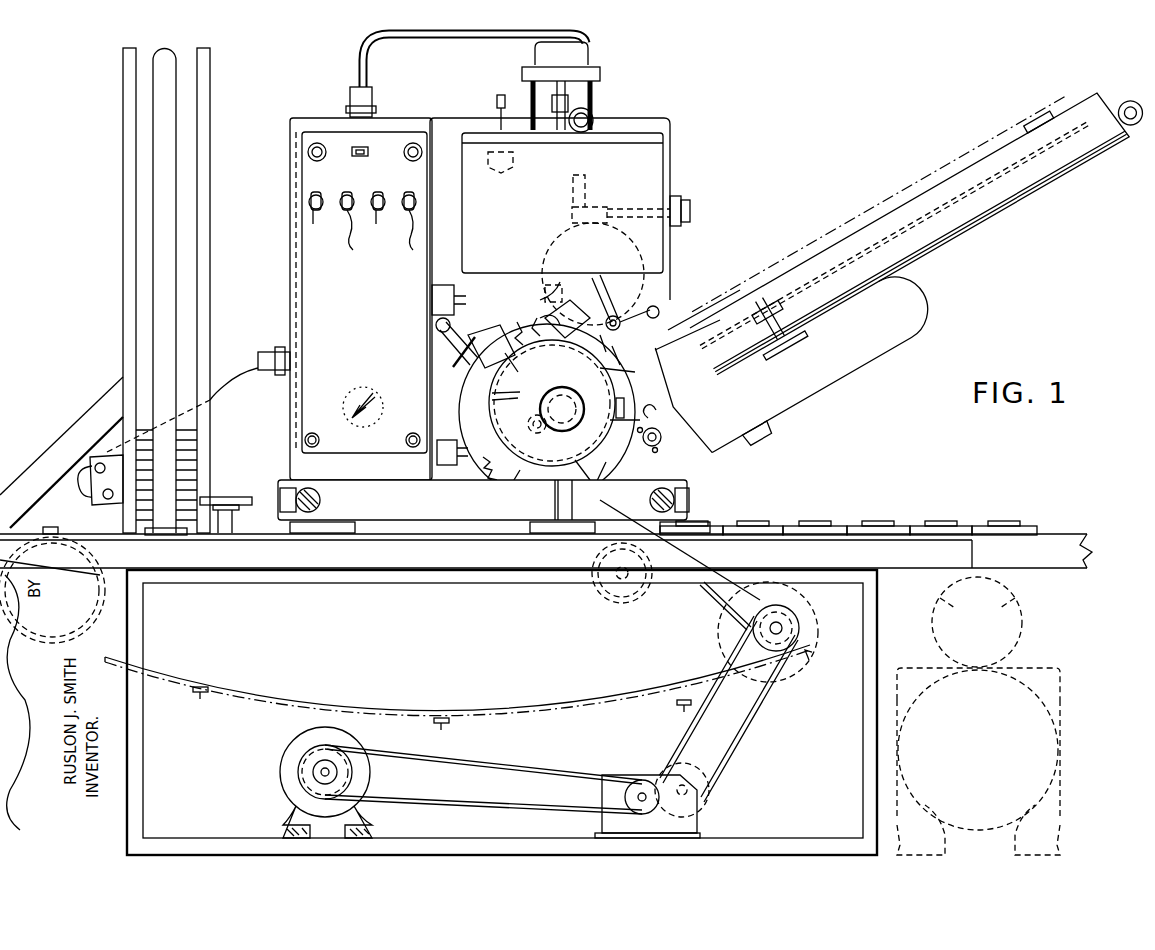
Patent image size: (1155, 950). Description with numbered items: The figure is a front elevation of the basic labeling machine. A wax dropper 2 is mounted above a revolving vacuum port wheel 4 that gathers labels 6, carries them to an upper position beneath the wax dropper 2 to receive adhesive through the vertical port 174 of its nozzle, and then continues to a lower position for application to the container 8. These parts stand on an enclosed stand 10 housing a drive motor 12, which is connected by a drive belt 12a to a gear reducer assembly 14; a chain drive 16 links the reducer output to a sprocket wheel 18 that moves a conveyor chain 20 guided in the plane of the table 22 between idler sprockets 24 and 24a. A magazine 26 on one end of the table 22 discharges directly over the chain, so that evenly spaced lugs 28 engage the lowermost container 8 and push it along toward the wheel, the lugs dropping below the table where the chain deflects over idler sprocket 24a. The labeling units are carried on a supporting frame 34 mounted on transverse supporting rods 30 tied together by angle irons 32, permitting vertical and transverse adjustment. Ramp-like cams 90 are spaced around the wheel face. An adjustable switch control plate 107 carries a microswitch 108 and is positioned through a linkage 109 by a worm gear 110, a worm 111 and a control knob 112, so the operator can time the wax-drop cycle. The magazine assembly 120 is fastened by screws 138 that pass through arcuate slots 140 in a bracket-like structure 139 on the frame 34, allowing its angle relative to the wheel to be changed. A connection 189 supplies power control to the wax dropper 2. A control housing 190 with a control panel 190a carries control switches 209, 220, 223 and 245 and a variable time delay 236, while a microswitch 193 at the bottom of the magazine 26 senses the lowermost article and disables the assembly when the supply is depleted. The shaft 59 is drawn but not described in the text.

The wax dropper 2 is at (622, 166).
The revolving vacuum port wheel 4 is at (552, 371).
The labels 6 is at (740, 520).
The container 8 is at (190, 490).
The enclosed stand 10 is at (863, 778).
The drive motor 12 is at (282, 765).
The drive belt 12a is at (562, 748).
The gear reducer assembly 14 is at (650, 780).
The chain drive 16 is at (738, 752).
The sprocket wheel 18 is at (812, 660).
The conveyor chain 20 is at (572, 700).
The table 22 is at (1088, 552).
The idler sprocket 24 is at (95, 575).
The idler sprocket 24a is at (632, 600).
The magazine 26 is at (183, 148).
The lugs 28 is at (52, 507).
The supporting rods 30 is at (298, 488).
The angle irons 32 is at (438, 508).
The supporting panel or frame 34 is at (667, 242).
The shaft 59 is at (540, 432).
The ramp-like cams 90 is at (605, 365).
The adjustable switch control plate 107 is at (525, 328).
The microswitch 108 is at (540, 298).
The linkage 109 is at (630, 302).
The worm gear 110 is at (562, 240).
The worm 111 is at (596, 195).
The control knob 112 is at (688, 200).
The magazine assembly 120 is at (1055, 210).
The screws 138 is at (665, 444).
The bracket-like structure 139 is at (700, 450).
The arcuate slots 140 is at (663, 419).
The vertical port 174 is at (545, 290).
The connection 189 is at (450, 36).
The control housing 190 is at (296, 230).
The control panel 190a is at (305, 280).
The microswitch 193 is at (105, 458).
The control switch 209 is at (321, 215).
The control switch 220 is at (333, 225).
The control switch 223 is at (381, 215).
The variable time delay 236 is at (375, 395).
The control switch 245 is at (396, 225).